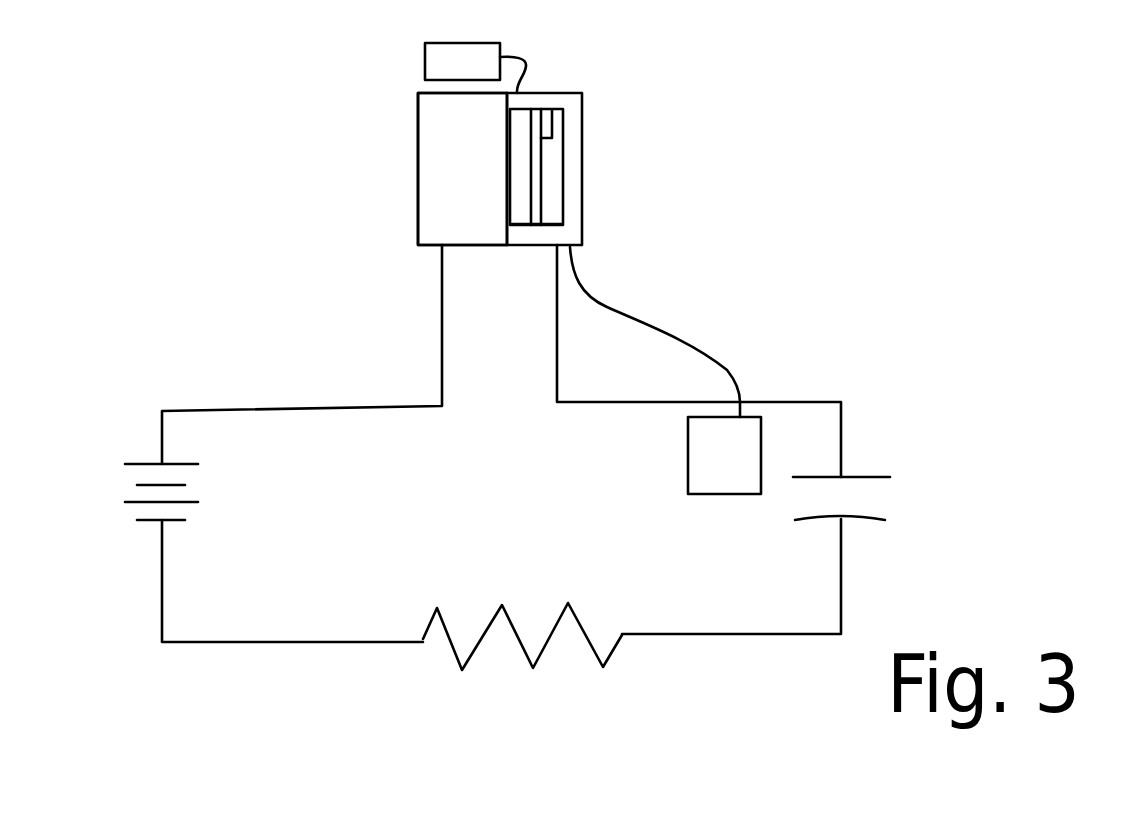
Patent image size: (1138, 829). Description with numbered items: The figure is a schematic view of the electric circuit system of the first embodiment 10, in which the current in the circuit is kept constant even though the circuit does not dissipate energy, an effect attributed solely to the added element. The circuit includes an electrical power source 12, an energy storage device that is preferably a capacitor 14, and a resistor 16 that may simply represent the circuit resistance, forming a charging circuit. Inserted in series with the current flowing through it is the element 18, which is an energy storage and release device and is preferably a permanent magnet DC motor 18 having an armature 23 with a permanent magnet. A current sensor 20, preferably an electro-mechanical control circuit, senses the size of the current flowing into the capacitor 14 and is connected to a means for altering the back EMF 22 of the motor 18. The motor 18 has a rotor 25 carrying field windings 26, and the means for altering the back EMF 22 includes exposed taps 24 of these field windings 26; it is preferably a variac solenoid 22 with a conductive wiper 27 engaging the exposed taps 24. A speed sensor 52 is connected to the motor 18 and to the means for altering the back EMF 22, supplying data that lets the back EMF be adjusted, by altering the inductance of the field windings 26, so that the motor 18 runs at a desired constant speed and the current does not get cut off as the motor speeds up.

The first embodiment 10 is at (763, 203).
The electrical power source 12 is at (135, 515).
The capacitor 14 is at (850, 523).
The resistor 16 is at (608, 667).
The permanent magnet motor 18 is at (412, 124).
The current sensor 20 is at (705, 471).
The means for altering the back EMF 22 is at (547, 80).
The armature 23 is at (445, 170).
The exposed taps 24 is at (535, 192).
The rotor 25 is at (548, 172).
The field windings 26 is at (522, 212).
The conductive wiper 27 is at (545, 127).
The speed sensor 52 is at (481, 75).